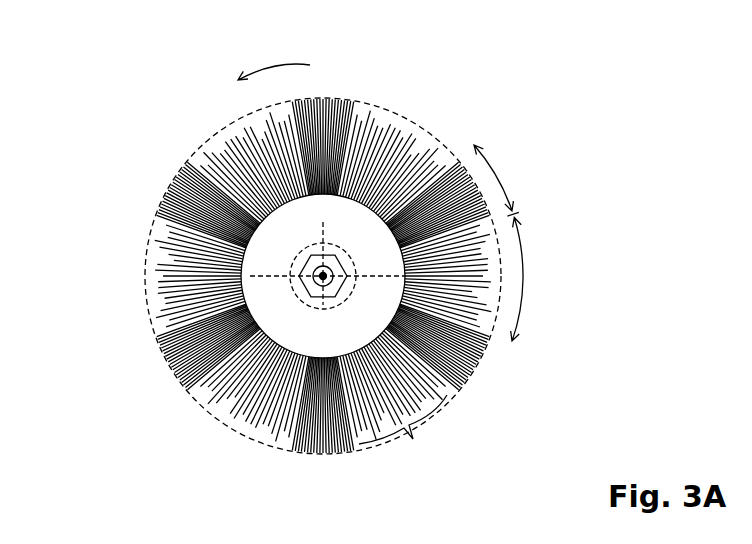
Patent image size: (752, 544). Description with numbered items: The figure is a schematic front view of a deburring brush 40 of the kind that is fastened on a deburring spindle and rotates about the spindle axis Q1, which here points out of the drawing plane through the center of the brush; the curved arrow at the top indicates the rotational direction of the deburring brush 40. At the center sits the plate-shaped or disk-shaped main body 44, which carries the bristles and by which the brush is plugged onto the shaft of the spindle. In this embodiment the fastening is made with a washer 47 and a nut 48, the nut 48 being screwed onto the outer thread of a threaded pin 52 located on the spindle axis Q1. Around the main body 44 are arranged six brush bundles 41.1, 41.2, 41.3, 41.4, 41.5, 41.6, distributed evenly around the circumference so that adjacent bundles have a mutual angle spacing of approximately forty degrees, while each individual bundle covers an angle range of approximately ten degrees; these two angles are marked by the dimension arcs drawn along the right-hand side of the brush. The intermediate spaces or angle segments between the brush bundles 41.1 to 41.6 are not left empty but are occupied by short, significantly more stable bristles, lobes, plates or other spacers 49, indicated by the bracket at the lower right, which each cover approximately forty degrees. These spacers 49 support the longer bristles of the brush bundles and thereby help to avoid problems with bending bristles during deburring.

The deburring brush 40 is at (60, 52).
The brush bundle 41.1 is at (351, 85).
The brush bundle 41.2 is at (452, 151).
The brush bundle 41.3 is at (493, 368).
The brush bundle 41.4 is at (345, 470).
The brush bundle 41.5 is at (158, 379).
The brush bundle 41.6 is at (148, 180).
The main body 44 is at (312, 339).
The washer 47 is at (340, 252).
The nut 48 is at (335, 289).
The threaded pin 52 is at (312, 291).
The spacers 49 is at (403, 431).
The spindle axis Q1 is at (320, 275).